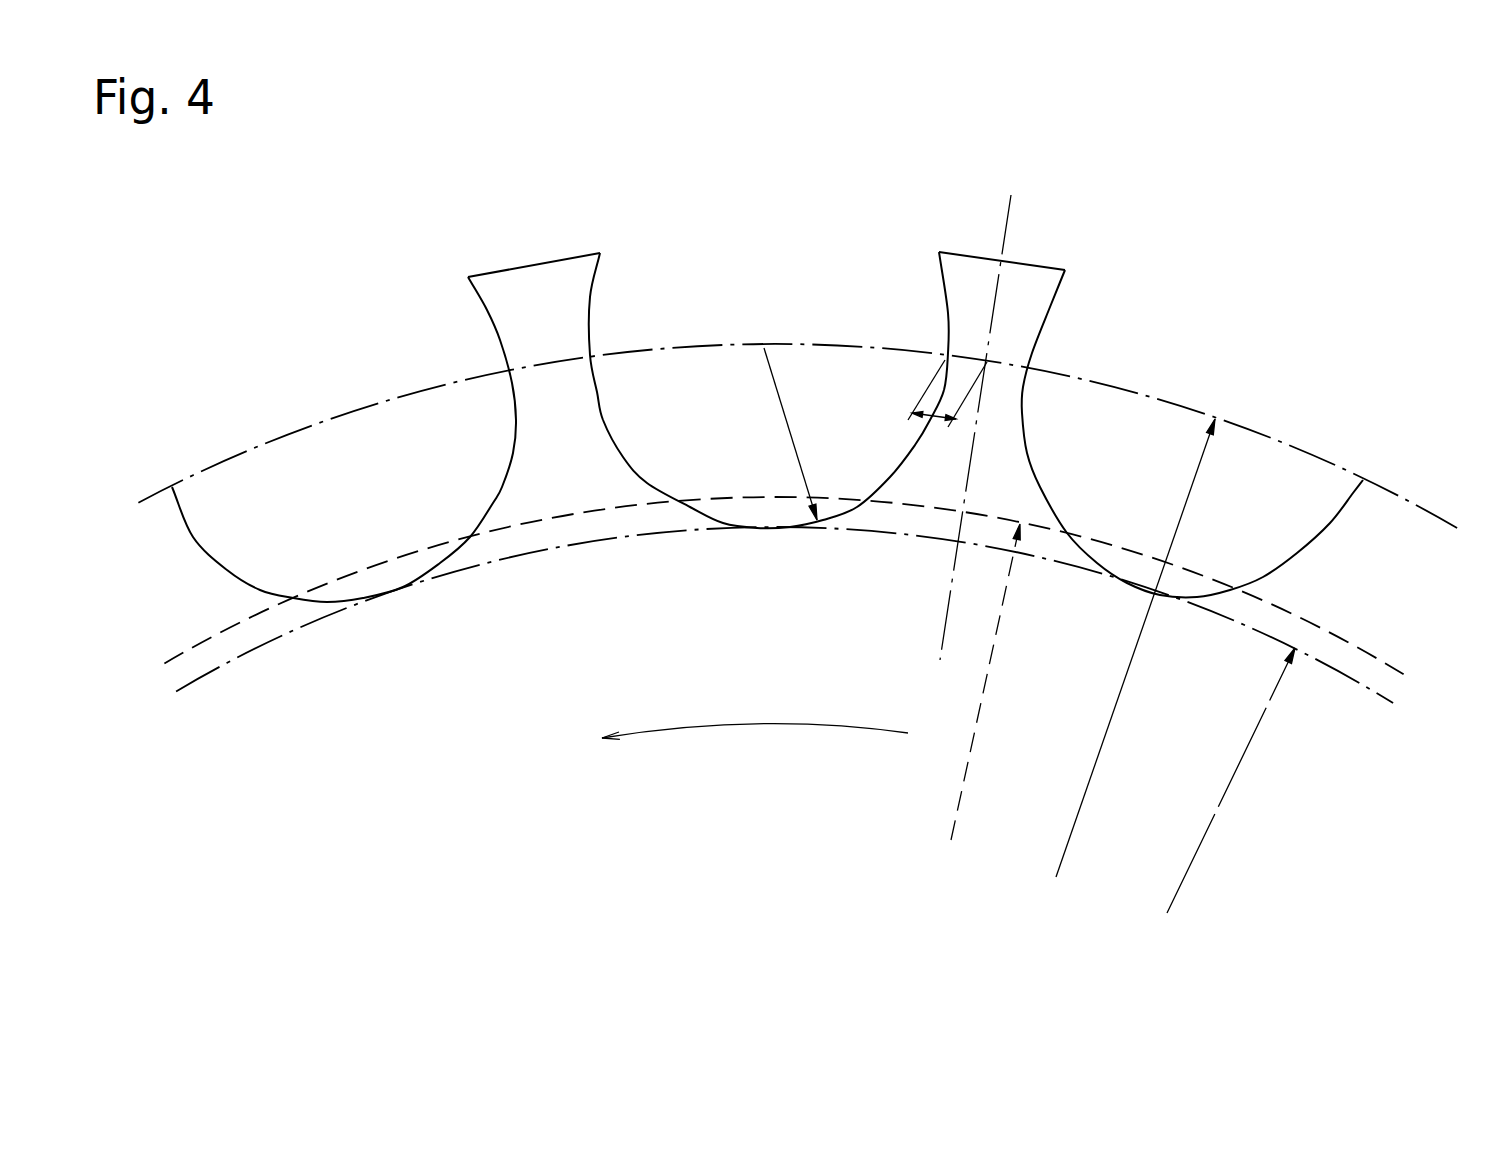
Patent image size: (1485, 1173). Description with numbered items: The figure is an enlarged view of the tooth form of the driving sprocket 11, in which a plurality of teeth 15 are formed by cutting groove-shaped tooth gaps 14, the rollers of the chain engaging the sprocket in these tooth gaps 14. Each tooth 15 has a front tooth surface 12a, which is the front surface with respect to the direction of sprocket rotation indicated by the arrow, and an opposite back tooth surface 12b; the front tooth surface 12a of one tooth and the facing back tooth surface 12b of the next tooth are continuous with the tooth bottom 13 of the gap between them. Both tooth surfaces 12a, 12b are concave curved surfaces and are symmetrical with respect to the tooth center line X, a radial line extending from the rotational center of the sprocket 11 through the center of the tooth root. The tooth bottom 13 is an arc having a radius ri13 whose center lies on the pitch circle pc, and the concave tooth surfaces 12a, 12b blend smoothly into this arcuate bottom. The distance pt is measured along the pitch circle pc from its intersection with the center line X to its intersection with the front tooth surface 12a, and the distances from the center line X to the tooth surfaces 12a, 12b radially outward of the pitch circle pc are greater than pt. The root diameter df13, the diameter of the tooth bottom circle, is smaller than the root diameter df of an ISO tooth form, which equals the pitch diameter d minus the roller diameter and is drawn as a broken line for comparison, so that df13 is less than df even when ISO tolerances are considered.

The driving sprocket 11 is at (797, 558).
The front tooth surface 12a is at (487, 312).
The back tooth surface 12b is at (600, 290).
The tooth bottom 13 is at (364, 594).
The tooth gap 14 is at (797, 403).
The tooth 15 is at (533, 266).
The pitch circle pc is at (1278, 436).
The distance pt is at (908, 418).
The radius of tooth bottom ri13 is at (790, 426).
The root diameter of ISO tooth form df is at (783, 688).
The pitch diameter d is at (1130, 665).
The root diameter df13 is at (784, 740).
The tooth center line X is at (981, 411).